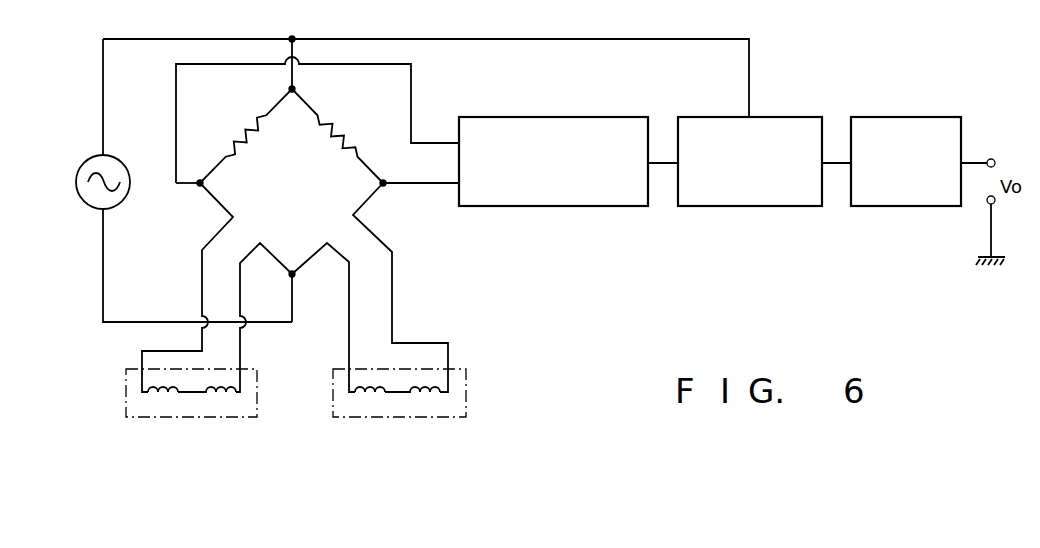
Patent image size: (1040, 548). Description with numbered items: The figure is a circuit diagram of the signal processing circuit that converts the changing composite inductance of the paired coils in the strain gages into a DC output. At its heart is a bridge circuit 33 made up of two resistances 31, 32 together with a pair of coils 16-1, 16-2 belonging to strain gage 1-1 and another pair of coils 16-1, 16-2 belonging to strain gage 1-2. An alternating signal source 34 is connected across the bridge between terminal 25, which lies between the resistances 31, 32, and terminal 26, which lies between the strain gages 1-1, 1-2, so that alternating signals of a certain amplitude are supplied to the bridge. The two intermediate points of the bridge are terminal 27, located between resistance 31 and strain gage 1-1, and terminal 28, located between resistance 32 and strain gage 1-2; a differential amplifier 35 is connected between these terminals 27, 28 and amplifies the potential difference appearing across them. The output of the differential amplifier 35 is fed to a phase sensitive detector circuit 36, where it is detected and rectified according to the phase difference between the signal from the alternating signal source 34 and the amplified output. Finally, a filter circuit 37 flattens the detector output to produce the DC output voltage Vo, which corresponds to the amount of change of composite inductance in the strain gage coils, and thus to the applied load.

The strain gage 1-1 is at (125, 388).
The strain gage 1-2 is at (467, 383).
The coil 16-1 is at (158, 397).
The coil 16-2 is at (223, 397).
The terminal 25 is at (293, 92).
The terminal 26 is at (292, 270).
The terminal 27 is at (205, 182).
The terminal 28 is at (378, 182).
The resistance 31 is at (238, 131).
The resistance 32 is at (350, 131).
The bridge circuit 33 is at (376, 209).
The alternating signal source 34 is at (78, 198).
The differential amplifier 35 is at (617, 197).
The phase sensitive detector circuit 36 is at (800, 197).
The filter circuit 37 is at (946, 197).